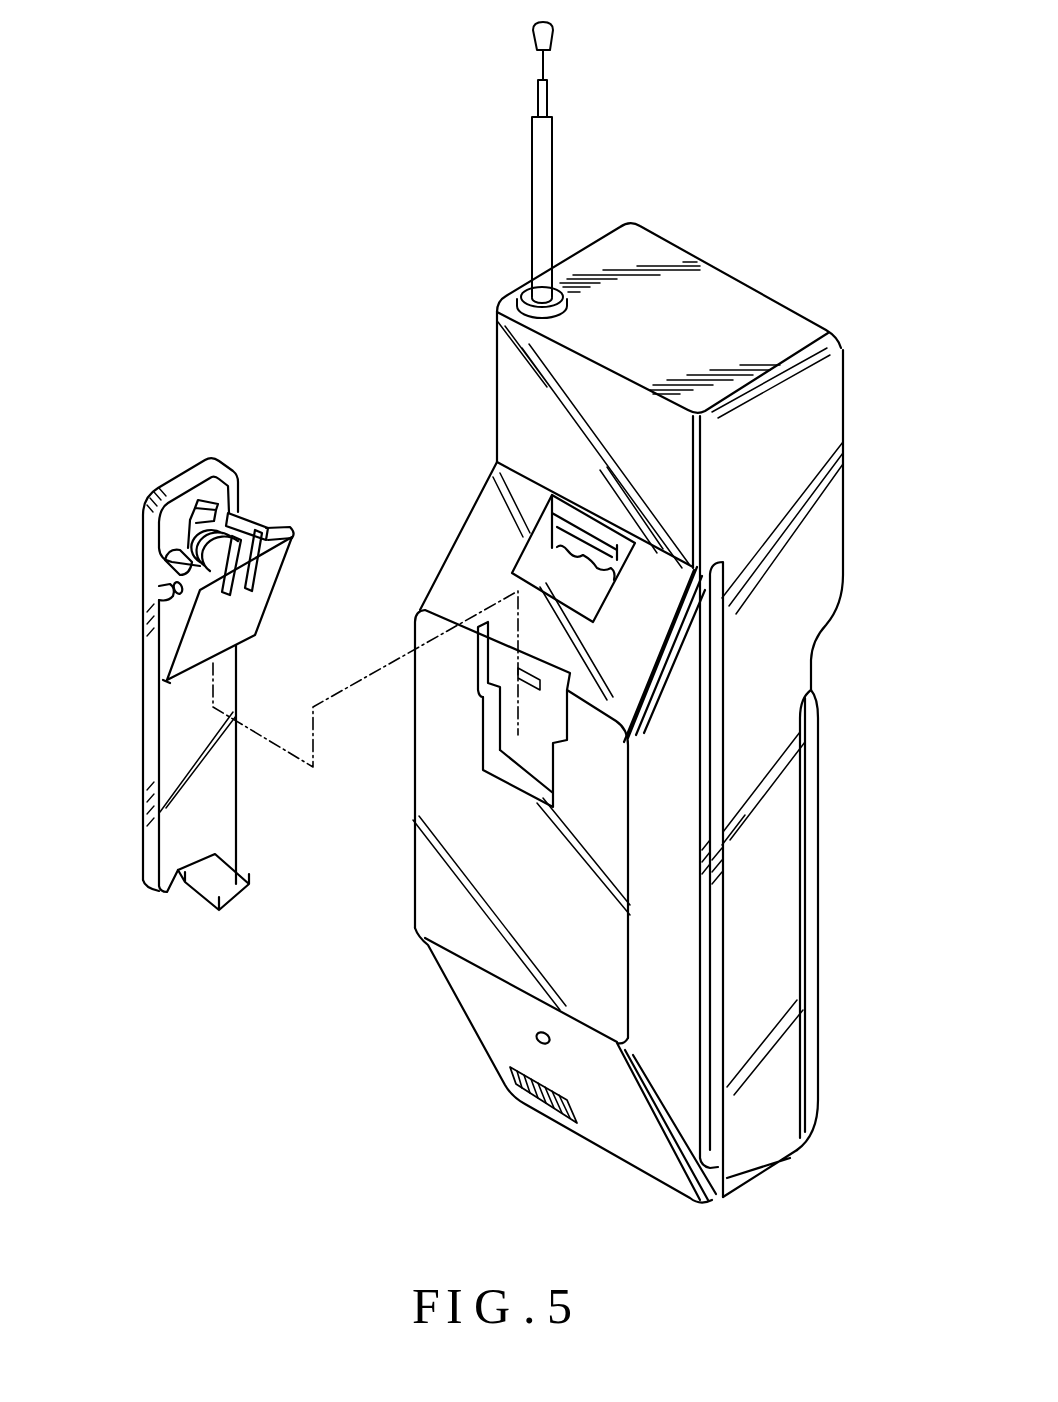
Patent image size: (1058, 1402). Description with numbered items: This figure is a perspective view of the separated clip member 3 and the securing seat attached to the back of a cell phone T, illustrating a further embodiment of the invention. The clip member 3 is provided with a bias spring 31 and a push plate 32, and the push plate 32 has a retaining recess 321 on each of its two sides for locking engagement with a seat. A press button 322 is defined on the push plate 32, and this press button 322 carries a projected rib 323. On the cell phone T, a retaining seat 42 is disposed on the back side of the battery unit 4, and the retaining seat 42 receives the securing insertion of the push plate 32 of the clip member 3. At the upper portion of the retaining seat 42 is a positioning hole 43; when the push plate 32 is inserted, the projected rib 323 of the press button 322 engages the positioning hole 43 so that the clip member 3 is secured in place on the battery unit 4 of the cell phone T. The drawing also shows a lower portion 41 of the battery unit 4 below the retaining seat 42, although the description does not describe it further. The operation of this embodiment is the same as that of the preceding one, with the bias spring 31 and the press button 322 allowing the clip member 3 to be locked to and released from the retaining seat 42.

The cell phone T is at (709, 293).
The clip member 3 is at (144, 735).
The bias spring 31 is at (205, 518).
The push plate 32 is at (238, 628).
The retaining recess 321 is at (284, 540).
The press button 322 is at (262, 538).
The projected rib 323 is at (262, 572).
The battery unit 4 is at (528, 799).
The lower face of battery cover 41 is at (436, 906).
The retaining seat 42 is at (487, 760).
The positioning hole 43 is at (477, 700).